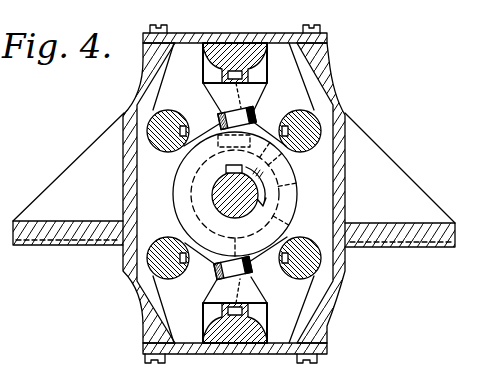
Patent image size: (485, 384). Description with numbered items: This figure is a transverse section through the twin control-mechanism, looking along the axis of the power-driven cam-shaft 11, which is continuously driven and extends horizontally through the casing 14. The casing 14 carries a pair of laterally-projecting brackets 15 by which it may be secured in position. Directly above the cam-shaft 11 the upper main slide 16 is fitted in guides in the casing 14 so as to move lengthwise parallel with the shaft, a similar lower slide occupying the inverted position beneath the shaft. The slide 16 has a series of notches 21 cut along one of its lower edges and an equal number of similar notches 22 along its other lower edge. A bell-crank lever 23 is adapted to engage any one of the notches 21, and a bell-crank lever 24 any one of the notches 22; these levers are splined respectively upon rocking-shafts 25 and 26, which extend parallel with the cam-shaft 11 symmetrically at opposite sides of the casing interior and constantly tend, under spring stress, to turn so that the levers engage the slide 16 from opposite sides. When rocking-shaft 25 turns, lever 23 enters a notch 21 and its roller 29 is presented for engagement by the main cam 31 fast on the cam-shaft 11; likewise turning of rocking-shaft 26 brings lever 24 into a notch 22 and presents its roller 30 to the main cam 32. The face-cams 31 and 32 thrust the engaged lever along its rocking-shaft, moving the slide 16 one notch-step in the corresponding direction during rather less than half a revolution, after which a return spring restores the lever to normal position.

The power-driven cam-shaft 11 is at (214, 193).
The casing 14 is at (123, 183).
The laterally-projecting bracket 15 is at (35, 245).
The upper main slide 16 is at (216, 52).
The notches 21 is at (208, 63).
The notches 22 is at (261, 70).
The bell-crank lever 23 is at (160, 81).
The bell-crank lever 24 is at (315, 77).
The rocking-shaft 25 is at (164, 152).
The rocking-shaft 26 is at (303, 152).
The roller 29 is at (220, 121).
The roller 30 is at (254, 120).
The main cam 31 is at (297, 197).
The main cam 32 is at (324, 198).